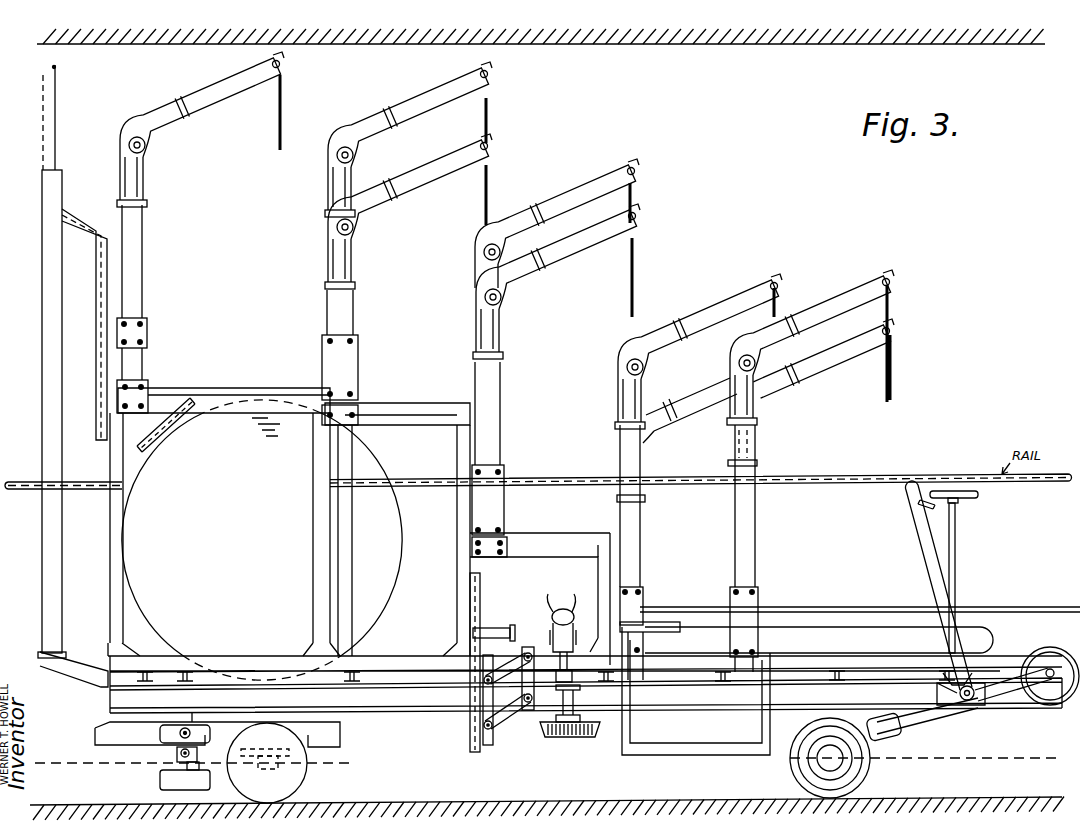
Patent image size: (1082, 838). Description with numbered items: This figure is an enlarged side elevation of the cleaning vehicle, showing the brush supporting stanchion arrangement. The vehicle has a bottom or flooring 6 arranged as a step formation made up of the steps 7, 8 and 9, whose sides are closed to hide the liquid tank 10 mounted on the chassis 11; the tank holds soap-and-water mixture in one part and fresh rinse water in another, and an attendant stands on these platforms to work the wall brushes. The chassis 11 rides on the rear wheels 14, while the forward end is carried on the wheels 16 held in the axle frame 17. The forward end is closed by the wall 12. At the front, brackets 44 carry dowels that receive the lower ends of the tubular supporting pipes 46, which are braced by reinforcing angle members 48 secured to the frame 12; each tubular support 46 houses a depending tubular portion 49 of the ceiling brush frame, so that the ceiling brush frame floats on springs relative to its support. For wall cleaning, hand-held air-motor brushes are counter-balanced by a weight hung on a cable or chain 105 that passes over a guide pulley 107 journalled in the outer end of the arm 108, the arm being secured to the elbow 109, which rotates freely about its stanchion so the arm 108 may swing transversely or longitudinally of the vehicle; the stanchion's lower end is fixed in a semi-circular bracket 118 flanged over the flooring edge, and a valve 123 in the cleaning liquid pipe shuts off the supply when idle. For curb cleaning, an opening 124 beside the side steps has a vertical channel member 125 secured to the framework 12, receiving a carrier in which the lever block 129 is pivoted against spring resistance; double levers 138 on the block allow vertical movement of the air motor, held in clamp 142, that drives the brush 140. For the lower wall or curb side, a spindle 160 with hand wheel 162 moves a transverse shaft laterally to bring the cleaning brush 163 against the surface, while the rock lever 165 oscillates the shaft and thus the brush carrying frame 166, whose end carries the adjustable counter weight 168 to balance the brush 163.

The bottom or flooring 6 is at (848, 648).
The step 7 is at (598, 533).
The step 8 is at (405, 404).
The step 9 is at (197, 394).
The liquid tank 10 is at (398, 527).
The chassis 11 is at (420, 698).
The wall 12 is at (460, 583).
The wheels 14 is at (836, 768).
The wheels 16 is at (293, 780).
The axle frame 17 is at (340, 735).
The brackets 44 is at (88, 662).
The tubular supporting pipe 46 is at (50, 406).
The reinforcing angle members 48 is at (84, 230).
The depending tubular portions 49 is at (46, 142).
The cable or chain 105 is at (283, 113).
The guide pulley 107 is at (486, 105).
The arm 108 is at (409, 128).
The elbow 109 is at (163, 123).
The bracket 118 is at (492, 503).
The valve 123 is at (163, 782).
The opening 124 is at (560, 565).
The vertical channel member 125 is at (480, 597).
The lever block 129 is at (498, 731).
The double levers 138 is at (512, 667).
The brush 140 is at (556, 726).
The clamp 142 is at (676, 753).
The operating spindle 160 is at (956, 516).
The hand wheel 162 is at (980, 496).
The cleaning brush 163 is at (1048, 655).
The rock lever 165 is at (933, 526).
The brush carrying frame 166 is at (987, 705).
The adjustable counter weight 168 is at (905, 736).